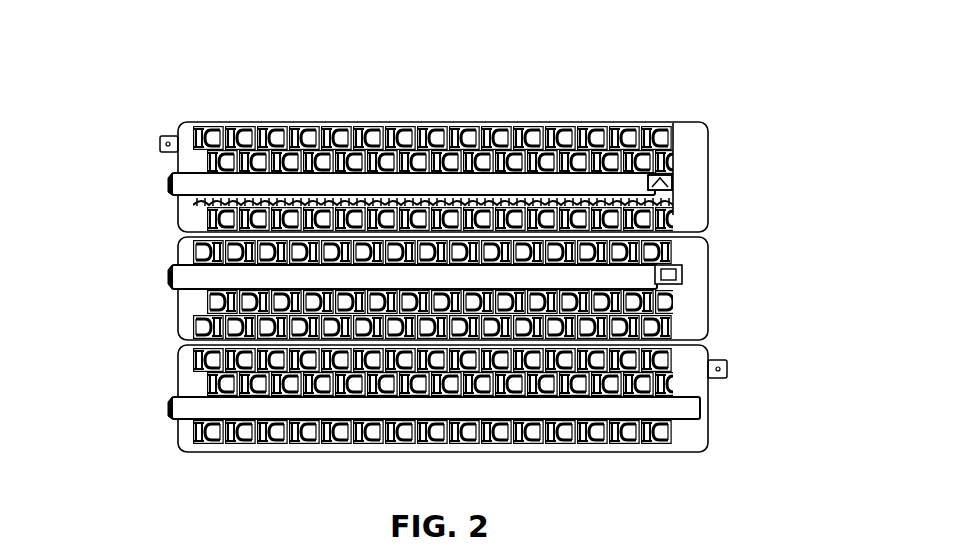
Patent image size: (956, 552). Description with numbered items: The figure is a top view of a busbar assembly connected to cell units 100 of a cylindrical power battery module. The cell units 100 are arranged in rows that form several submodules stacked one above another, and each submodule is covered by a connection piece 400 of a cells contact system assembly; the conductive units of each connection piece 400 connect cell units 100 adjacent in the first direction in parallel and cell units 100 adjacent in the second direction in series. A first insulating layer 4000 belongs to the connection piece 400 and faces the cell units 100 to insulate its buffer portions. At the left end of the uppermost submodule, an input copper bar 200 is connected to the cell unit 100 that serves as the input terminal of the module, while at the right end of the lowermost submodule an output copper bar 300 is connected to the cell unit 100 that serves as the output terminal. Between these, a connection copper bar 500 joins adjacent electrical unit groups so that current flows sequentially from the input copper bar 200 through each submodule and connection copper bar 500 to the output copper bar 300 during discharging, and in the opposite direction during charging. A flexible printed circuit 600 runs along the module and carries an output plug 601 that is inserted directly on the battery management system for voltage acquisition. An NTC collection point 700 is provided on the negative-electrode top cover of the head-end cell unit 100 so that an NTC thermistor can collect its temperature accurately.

The cell unit 100 is at (434, 236).
The input copper bar 200 is at (111, 138).
The output copper bar 300 is at (765, 404).
The connection piece 400 is at (548, 105).
The first insulating layer 4000 is at (660, 182).
The connection copper bar 500 is at (739, 256).
The flexible printed circuit 600 is at (351, 269).
The output plug 601 is at (372, 413).
The NTC collection point 700 is at (411, 107).